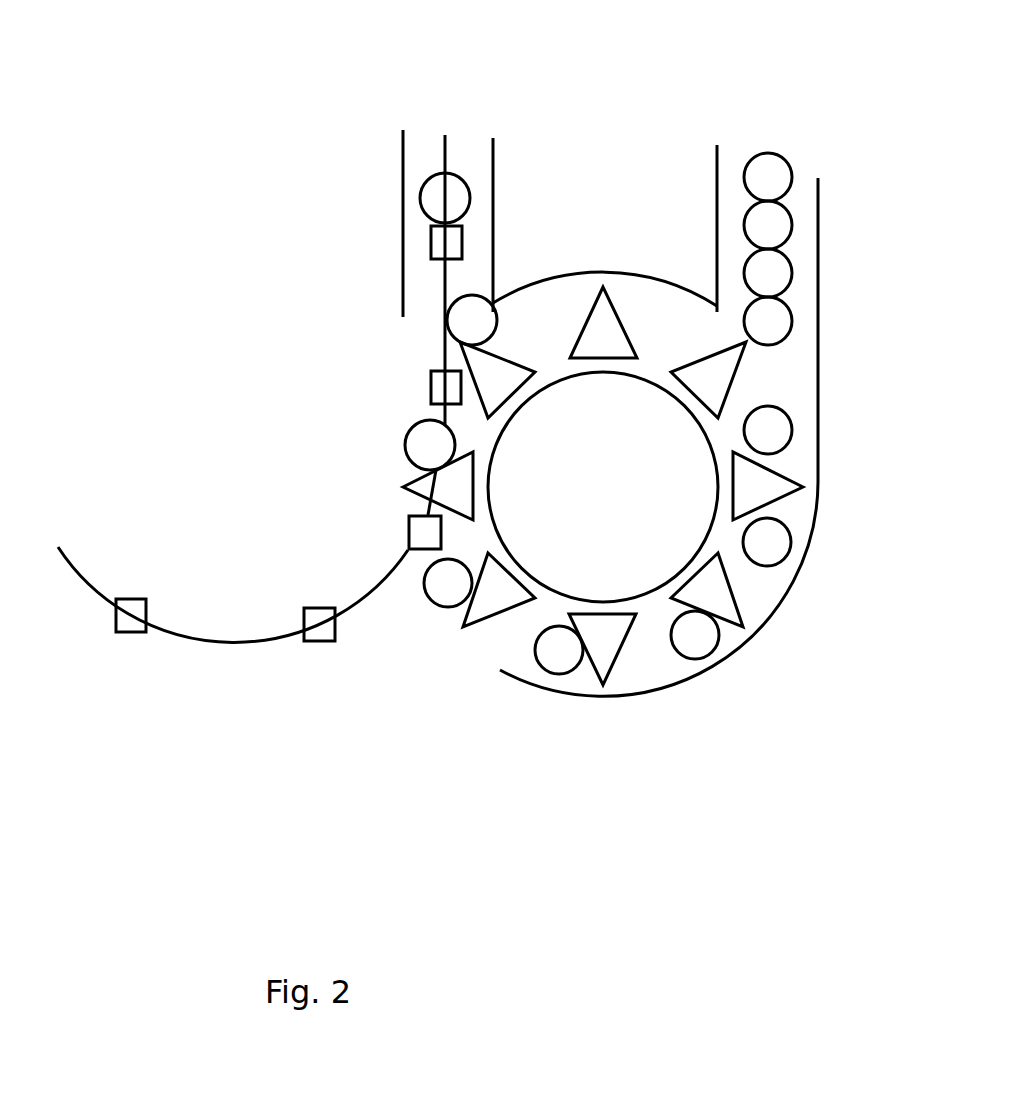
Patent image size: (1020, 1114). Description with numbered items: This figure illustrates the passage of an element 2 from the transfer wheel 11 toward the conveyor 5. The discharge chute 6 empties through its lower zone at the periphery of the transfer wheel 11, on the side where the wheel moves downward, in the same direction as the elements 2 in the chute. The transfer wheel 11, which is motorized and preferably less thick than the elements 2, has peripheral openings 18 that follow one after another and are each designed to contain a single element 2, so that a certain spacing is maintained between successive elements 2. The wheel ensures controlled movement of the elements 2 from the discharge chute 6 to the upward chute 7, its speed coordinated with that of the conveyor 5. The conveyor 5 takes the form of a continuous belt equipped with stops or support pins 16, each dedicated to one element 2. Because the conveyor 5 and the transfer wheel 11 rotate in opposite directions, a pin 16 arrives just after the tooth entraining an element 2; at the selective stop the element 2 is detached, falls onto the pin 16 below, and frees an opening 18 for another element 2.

The element 2 is at (557, 647).
The conveyor 5 is at (123, 525).
The discharge chute 6 is at (702, 163).
The upward chute 7 is at (505, 132).
The transfer wheel 11 is at (568, 552).
The stop 16 is at (445, 242).
The opening 18 is at (647, 320).